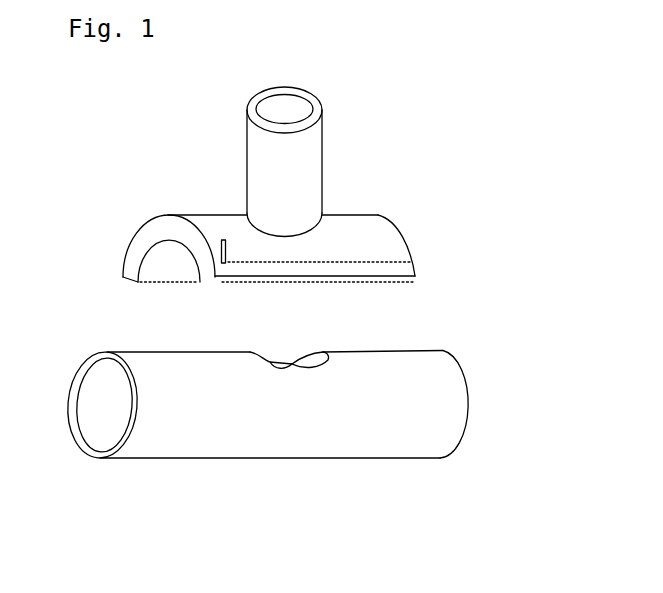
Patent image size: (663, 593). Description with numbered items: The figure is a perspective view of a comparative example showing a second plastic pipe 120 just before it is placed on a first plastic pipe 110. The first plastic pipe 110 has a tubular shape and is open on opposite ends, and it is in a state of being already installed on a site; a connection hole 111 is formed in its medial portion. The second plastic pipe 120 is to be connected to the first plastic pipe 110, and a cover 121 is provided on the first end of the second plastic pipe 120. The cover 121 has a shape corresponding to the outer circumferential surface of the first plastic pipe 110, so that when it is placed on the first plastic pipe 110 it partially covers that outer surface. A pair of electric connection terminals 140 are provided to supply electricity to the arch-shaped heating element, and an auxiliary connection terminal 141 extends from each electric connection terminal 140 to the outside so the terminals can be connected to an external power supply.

The first plastic pipe 110 is at (248, 440).
The connection hole 111 is at (292, 363).
The second plastic pipe 120 is at (300, 161).
The cover 121 is at (378, 237).
The electric connection terminals 140 is at (292, 263).
The auxiliary connection terminal 141 is at (223, 240).